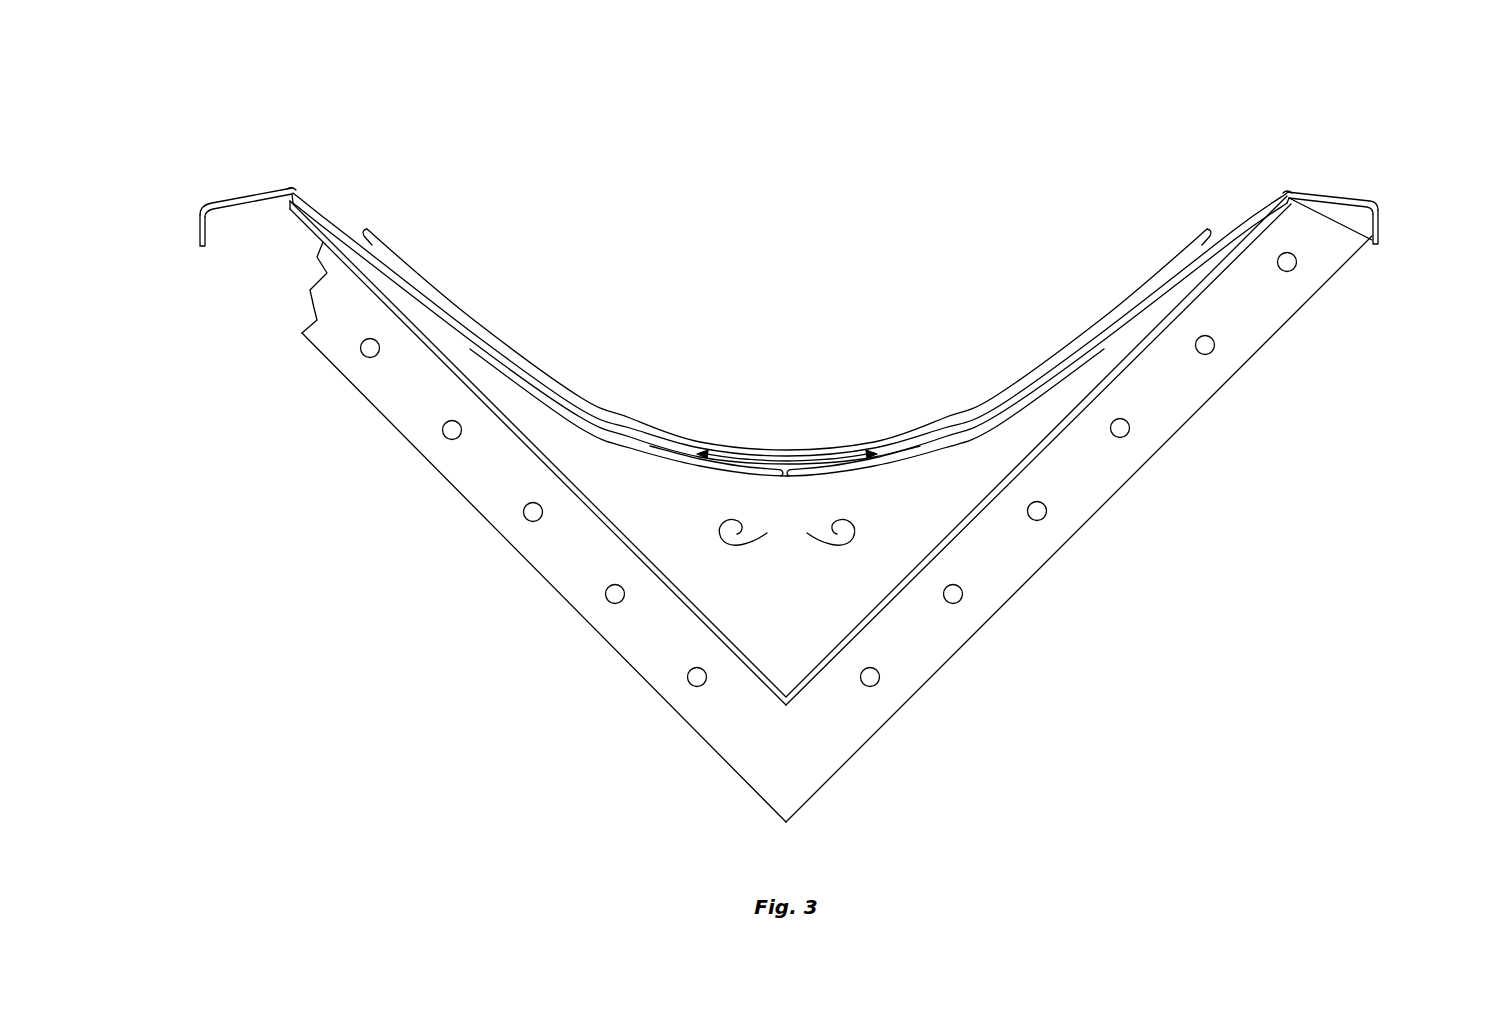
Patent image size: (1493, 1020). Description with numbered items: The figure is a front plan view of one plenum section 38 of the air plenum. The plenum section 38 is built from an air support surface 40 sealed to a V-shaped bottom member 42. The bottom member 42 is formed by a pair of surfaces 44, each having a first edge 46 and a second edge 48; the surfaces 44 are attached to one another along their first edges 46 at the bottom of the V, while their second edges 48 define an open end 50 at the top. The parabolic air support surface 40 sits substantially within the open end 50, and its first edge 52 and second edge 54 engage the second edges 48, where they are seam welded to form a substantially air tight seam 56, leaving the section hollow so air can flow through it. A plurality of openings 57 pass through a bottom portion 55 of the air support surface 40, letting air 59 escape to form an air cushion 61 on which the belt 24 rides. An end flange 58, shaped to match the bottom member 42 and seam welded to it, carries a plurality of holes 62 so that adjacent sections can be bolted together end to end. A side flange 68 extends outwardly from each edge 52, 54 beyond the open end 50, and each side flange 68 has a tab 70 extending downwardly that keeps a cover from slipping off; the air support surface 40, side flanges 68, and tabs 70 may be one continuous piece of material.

The belt 24 is at (1167, 270).
The plenum section 38 is at (240, 170).
The air support surface 40 is at (1238, 218).
The V-shaped bottom member 42 is at (985, 515).
The surface 44 is at (590, 512).
The first edge 46 is at (773, 700).
The second edge 48 is at (290, 205).
The open end 50 is at (1142, 330).
The first edge 52 is at (305, 195).
The second edge 54 is at (1290, 188).
The bottom portion 55 is at (700, 462).
The air tight seam 56 is at (290, 200).
The opening 57 is at (797, 475).
The end flange 58 is at (483, 472).
The air 59 is at (792, 480).
The air cushion 61 is at (975, 425).
The hole 62 is at (1130, 435).
The side flange 68 is at (245, 200).
The tab 70 is at (198, 230).